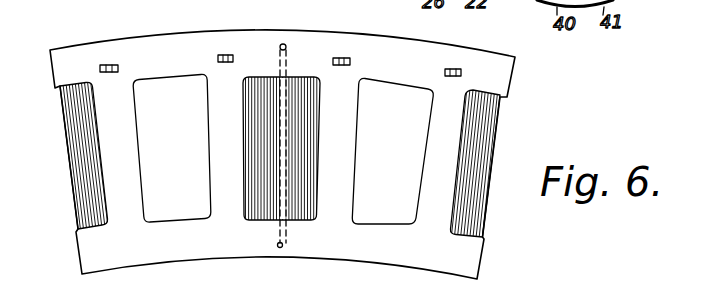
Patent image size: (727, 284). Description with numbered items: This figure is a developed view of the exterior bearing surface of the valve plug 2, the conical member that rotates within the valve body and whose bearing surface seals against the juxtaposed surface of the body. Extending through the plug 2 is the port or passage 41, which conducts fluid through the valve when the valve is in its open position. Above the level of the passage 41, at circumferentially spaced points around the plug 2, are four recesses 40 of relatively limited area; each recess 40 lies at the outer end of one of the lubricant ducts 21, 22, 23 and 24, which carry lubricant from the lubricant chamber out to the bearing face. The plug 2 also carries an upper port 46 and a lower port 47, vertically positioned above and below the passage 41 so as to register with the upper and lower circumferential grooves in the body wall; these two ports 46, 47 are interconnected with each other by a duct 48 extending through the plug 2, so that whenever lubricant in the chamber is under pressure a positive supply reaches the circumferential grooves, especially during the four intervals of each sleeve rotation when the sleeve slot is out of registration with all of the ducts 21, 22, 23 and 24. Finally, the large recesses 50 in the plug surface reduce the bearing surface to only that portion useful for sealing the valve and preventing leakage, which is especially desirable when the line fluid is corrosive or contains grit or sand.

The valve plug 2 is at (256, 26).
The lubricant duct 21 is at (108, 72).
The lubricant duct 22 is at (451, 77).
The lubricant duct 23 is at (339, 65).
The lubricant duct 24 is at (225, 62).
The recess 40 is at (118, 67).
The port or passage 41 is at (196, 135).
The port 46 is at (284, 44).
The port 47 is at (283, 245).
The duct 48 is at (282, 155).
The recess 50 is at (95, 138).